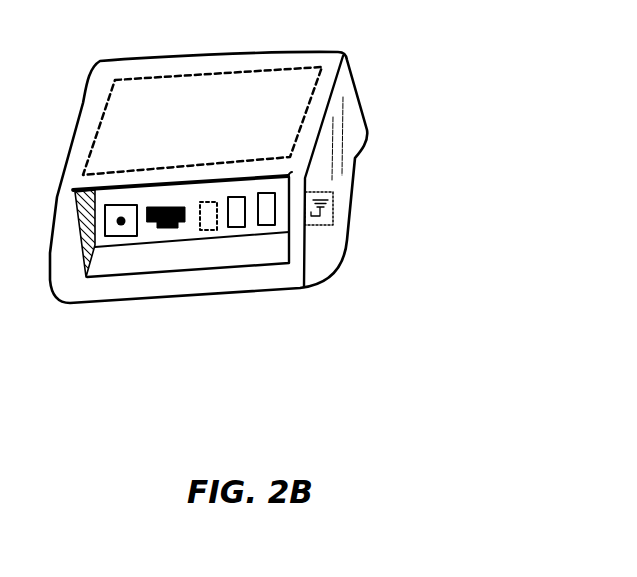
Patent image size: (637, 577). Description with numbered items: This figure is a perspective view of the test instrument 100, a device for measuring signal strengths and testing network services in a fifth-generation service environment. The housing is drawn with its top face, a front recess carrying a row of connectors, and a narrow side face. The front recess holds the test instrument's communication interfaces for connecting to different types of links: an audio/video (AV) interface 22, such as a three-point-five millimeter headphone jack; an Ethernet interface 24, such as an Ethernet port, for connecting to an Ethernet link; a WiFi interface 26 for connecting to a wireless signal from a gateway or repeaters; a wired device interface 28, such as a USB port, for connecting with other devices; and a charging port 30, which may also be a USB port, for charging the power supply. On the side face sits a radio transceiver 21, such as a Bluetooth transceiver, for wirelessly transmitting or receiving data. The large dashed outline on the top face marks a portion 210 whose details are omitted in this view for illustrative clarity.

The test instrument 100 is at (395, 117).
The portion 210 is at (301, 71).
The radio transceiver 21 is at (322, 225).
The audio/video (AV) interface 22 is at (122, 237).
The Ethernet interface 24 is at (170, 227).
The WiFi interface 26 is at (210, 230).
The wired device interface 28 is at (243, 227).
The charging port 30 is at (272, 225).